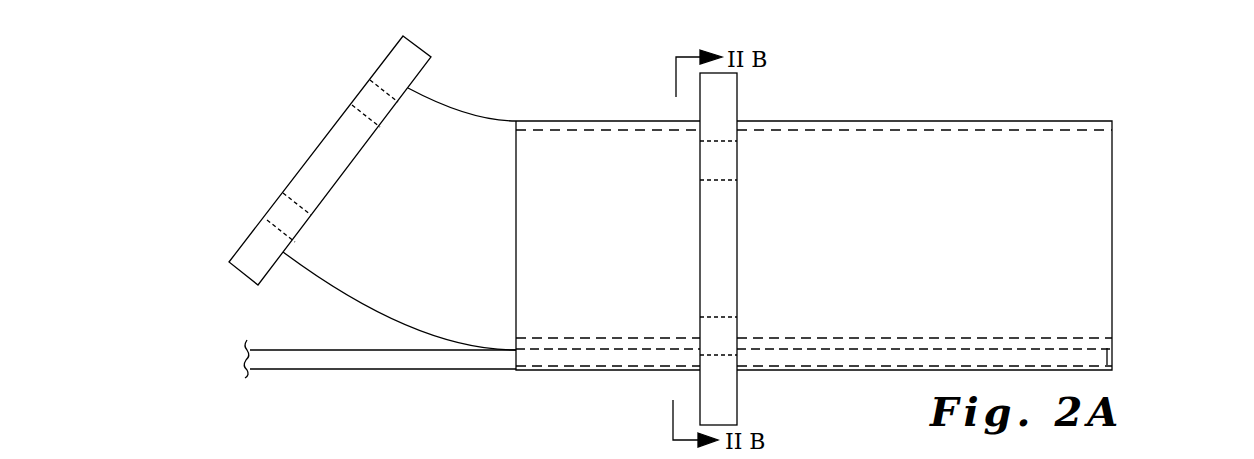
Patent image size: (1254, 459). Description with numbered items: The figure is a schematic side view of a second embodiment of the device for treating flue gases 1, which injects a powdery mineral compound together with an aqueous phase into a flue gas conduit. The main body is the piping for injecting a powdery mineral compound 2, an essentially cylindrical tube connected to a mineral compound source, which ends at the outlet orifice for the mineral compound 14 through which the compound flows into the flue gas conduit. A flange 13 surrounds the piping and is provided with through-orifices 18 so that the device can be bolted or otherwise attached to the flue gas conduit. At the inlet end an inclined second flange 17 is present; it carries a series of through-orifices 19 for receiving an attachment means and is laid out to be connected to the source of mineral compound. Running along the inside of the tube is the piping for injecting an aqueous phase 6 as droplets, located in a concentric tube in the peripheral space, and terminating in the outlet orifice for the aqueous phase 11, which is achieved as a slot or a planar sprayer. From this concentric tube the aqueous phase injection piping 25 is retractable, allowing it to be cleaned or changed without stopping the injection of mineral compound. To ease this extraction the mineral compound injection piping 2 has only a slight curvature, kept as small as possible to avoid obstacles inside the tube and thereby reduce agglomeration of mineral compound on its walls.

The device for treating flue gases 1 is at (514, 98).
The piping for injecting a powdery mineral compound 2 is at (357, 262).
The piping for injecting an aqueous phase 6 is at (1112, 342).
The outlet orifice for an aqueous phase 11 is at (1112, 353).
The flange 13 is at (722, 227).
The outlet orifice for the mineral compound 14 is at (1112, 213).
The second flange 17 is at (327, 167).
The through-orifices 18 is at (715, 172).
The through-orifices 19 is at (373, 110).
The aqueous phase injection piping 25 is at (286, 362).